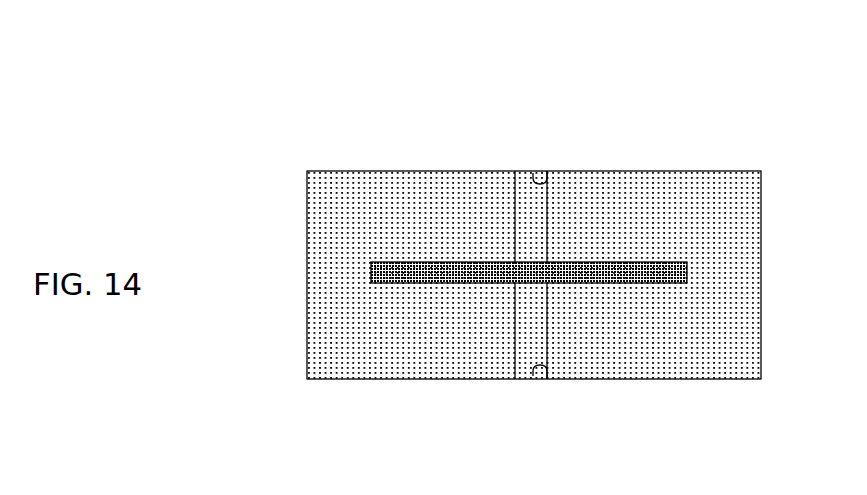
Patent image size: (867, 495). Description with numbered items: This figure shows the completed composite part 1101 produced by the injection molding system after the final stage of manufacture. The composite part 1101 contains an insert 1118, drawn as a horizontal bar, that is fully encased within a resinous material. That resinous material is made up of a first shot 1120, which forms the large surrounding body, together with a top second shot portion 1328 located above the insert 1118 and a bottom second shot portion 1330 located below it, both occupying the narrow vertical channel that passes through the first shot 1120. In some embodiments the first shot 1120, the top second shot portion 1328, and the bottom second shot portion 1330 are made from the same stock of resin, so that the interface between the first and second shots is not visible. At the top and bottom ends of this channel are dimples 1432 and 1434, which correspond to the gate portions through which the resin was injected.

The composite part 1101 is at (504, 249).
The first shot 1120 is at (678, 346).
The insert 1118 is at (591, 262).
The top second shot portion 1328 is at (515, 220).
The bottom second shot portion 1330 is at (515, 323).
The dimple 1432 is at (547, 171).
The dimple 1434 is at (547, 379).